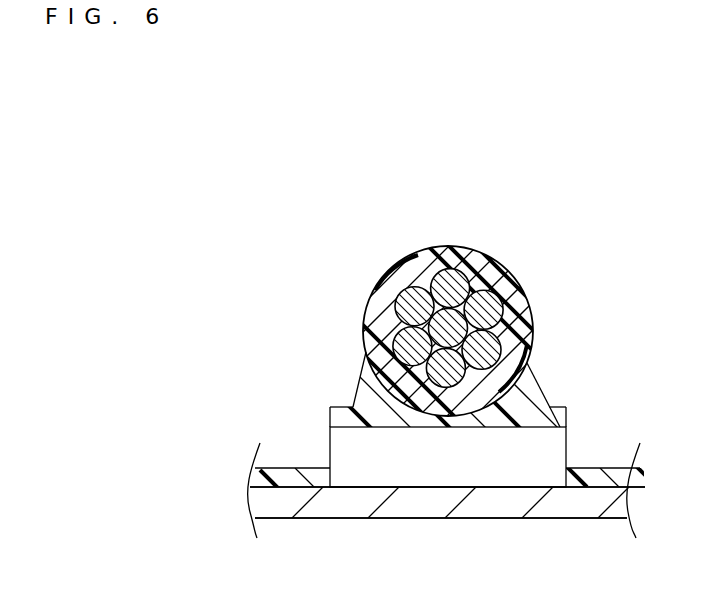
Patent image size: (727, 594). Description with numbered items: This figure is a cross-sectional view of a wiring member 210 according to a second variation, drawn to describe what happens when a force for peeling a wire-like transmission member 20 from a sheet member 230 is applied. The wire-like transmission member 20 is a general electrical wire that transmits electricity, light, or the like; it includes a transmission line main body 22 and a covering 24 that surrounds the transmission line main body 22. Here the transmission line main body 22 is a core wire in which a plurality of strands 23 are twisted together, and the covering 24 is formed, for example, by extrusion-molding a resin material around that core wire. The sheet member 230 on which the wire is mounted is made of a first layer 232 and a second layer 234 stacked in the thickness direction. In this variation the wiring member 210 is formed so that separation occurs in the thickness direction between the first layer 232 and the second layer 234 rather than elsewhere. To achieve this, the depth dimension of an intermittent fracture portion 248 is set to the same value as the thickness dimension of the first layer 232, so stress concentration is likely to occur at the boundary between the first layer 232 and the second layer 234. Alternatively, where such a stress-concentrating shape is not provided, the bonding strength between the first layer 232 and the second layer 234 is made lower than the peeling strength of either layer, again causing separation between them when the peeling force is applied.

The wiring member 210 is at (325, 117).
The wire-like transmission member 20 is at (507, 163).
The covering 24 is at (440, 262).
The transmission line main body 22 is at (518, 200).
The strand 23 is at (451, 272).
The first layer 232 is at (525, 390).
The intermittent fracture portion 248 is at (331, 480).
The sheet member 230 is at (428, 522).
The second layer 234 is at (503, 503).